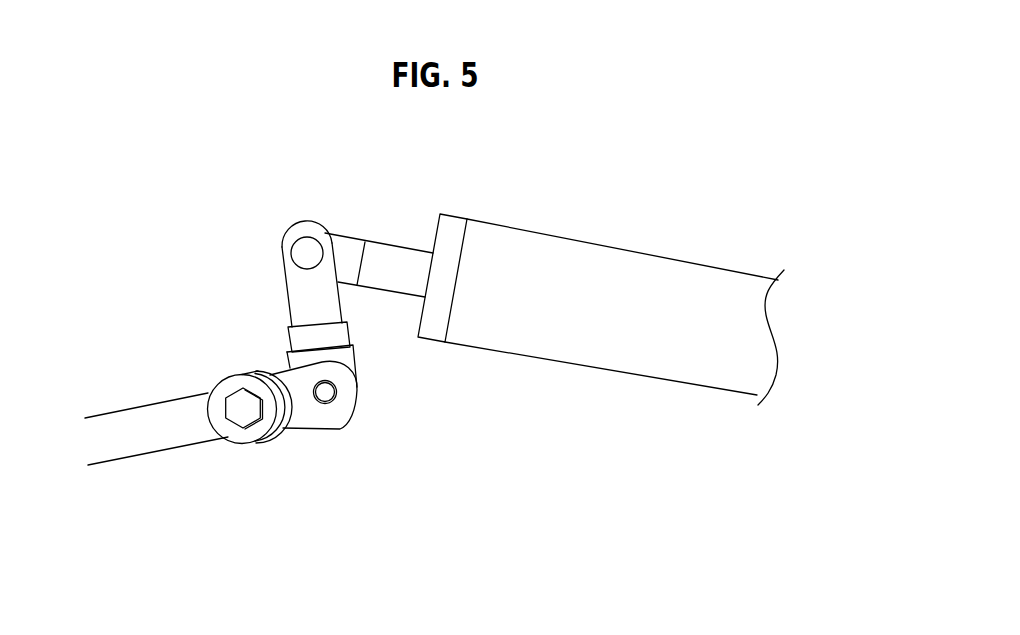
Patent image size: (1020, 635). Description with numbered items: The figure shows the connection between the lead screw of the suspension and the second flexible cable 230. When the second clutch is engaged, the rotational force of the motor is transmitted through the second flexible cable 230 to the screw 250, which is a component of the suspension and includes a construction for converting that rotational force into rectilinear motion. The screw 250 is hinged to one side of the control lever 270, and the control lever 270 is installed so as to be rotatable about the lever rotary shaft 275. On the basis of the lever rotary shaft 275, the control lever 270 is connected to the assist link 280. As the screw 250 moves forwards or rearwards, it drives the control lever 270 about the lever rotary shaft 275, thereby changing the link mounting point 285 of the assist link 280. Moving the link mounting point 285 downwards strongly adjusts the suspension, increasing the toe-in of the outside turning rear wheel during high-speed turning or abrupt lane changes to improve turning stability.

The second flexible cable 230 is at (588, 352).
The screw 250 is at (395, 256).
The control lever 270 is at (298, 298).
The lever rotary shaft 275 is at (329, 396).
The assist link 280 is at (143, 443).
The link mounting point 285 is at (248, 443).